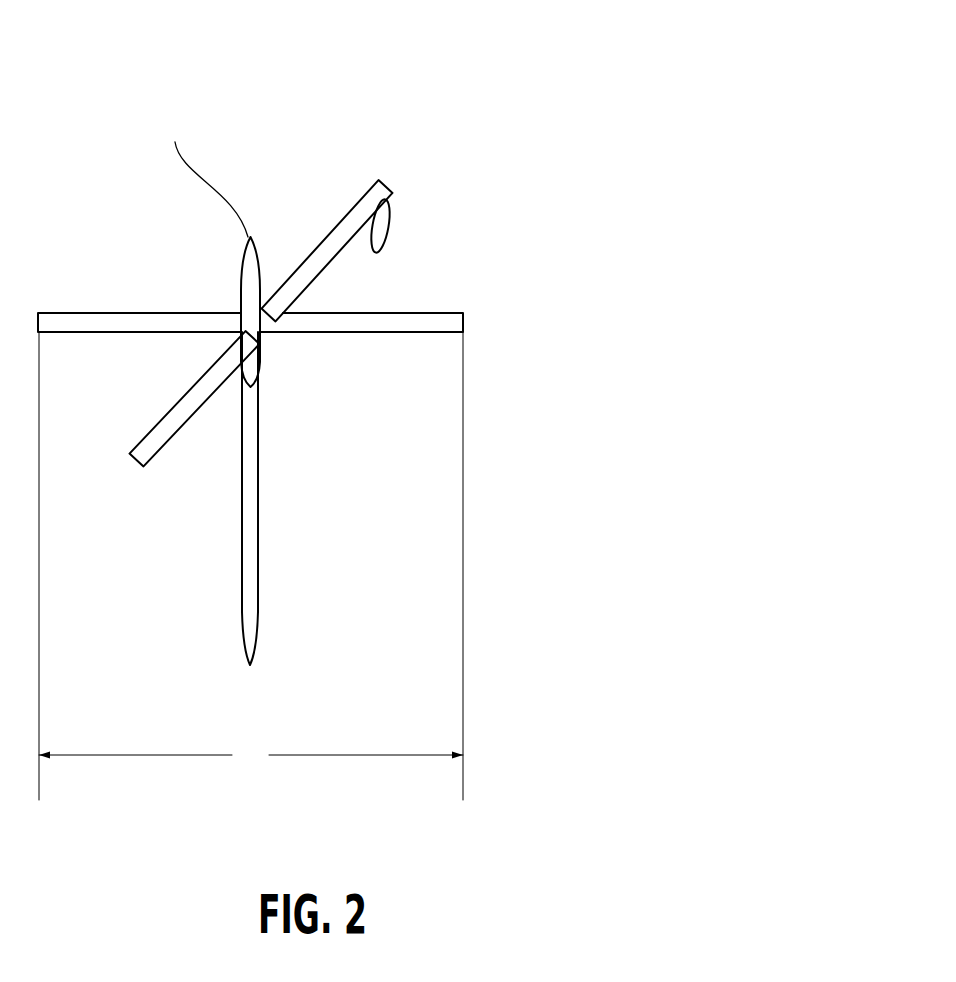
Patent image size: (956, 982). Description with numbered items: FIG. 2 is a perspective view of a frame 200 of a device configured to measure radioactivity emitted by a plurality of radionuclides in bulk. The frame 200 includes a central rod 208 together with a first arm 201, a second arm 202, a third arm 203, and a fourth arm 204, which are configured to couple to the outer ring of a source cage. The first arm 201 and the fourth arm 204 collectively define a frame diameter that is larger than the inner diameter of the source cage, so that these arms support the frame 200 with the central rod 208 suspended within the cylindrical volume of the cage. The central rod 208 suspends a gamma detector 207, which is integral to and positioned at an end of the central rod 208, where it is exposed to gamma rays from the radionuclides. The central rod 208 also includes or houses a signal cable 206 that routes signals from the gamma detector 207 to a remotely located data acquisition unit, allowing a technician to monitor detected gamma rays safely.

The frame 200 is at (572, 90).
The first arm 201 is at (175, 312).
The second arm 202 is at (390, 181).
The third arm 203 is at (132, 466).
The fourth arm 204 is at (400, 332).
The signal cable 206 is at (218, 168).
The gamma detector 207 is at (255, 648).
The central rod 208 is at (260, 538).